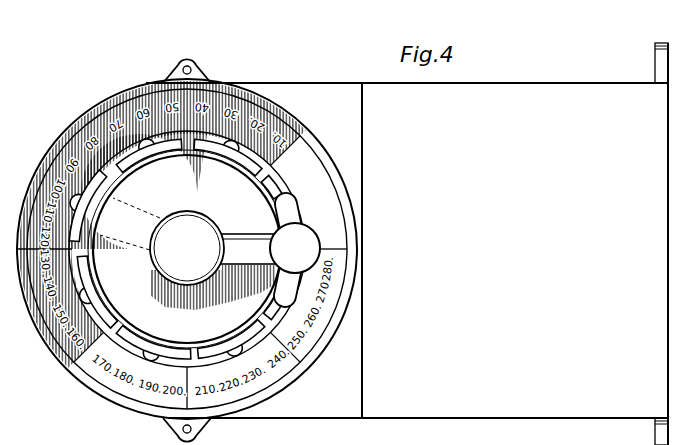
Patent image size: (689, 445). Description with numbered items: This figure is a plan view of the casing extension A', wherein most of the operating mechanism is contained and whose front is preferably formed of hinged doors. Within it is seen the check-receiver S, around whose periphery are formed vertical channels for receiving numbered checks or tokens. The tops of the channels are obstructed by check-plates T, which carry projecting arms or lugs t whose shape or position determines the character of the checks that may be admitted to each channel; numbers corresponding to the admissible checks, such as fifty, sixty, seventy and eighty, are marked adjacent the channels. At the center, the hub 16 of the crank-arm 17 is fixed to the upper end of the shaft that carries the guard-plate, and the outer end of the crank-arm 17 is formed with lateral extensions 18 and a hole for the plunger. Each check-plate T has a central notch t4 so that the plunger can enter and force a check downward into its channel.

The hub 16 is at (187, 248).
The crank-arm 17 is at (249, 249).
The lateral extensions 18 is at (270, 250).
The check-receiver S is at (187, 249).
The projecting arms or lugs t is at (90, 273).
The central notch t4 is at (144, 355).
The check-plates T is at (57, 214).
The casing extension A' is at (407, 244).